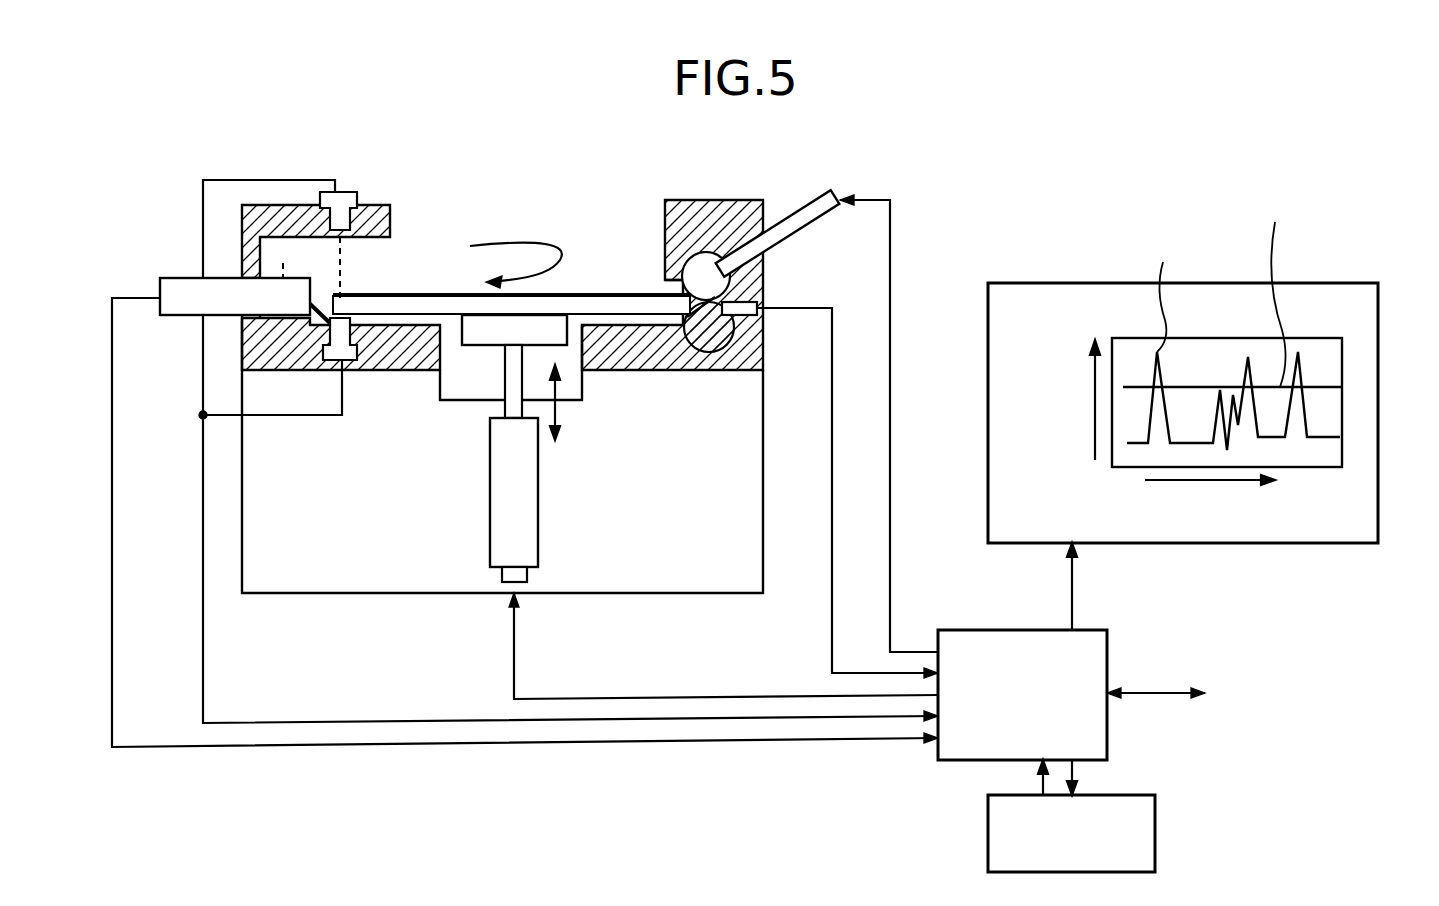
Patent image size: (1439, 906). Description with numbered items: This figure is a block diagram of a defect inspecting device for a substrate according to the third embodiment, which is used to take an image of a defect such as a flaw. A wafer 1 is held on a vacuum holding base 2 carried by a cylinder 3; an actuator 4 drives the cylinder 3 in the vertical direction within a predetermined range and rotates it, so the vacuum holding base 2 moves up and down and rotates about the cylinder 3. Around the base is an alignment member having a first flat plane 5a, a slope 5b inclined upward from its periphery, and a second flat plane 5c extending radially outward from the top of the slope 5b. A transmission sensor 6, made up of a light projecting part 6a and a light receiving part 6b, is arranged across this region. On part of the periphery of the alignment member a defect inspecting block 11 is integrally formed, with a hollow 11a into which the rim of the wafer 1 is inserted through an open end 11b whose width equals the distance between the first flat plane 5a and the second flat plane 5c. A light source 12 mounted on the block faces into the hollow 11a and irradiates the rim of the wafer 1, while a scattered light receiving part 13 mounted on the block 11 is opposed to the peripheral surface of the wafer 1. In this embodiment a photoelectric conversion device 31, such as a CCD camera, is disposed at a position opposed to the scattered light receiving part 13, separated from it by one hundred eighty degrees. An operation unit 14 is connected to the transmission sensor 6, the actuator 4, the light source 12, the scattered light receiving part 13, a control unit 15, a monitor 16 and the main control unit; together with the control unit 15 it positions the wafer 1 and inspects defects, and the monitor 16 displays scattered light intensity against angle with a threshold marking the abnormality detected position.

The wafer 1 is at (459, 293).
The vacuum holding base 2 is at (558, 323).
The cylinder 3 is at (500, 410).
The actuator 4 is at (495, 548).
The first flat plane 5a is at (413, 297).
The slope 5b is at (336, 316).
The second flat plane 5c is at (282, 274).
The transmission sensor 6 is at (335, 190).
The light projecting part 6a is at (357, 200).
The light receiving part 6b is at (350, 362).
The defect inspecting block 11 is at (752, 200).
The hollow 11a is at (705, 263).
The open end 11b is at (668, 284).
The light source 12 is at (806, 203).
The scattered light receiving part 13 is at (735, 289).
The operation unit 14 is at (983, 630).
The control unit 15 is at (988, 838).
The monitor 16 is at (1188, 545).
The photoelectric conversion device 31 is at (212, 297).